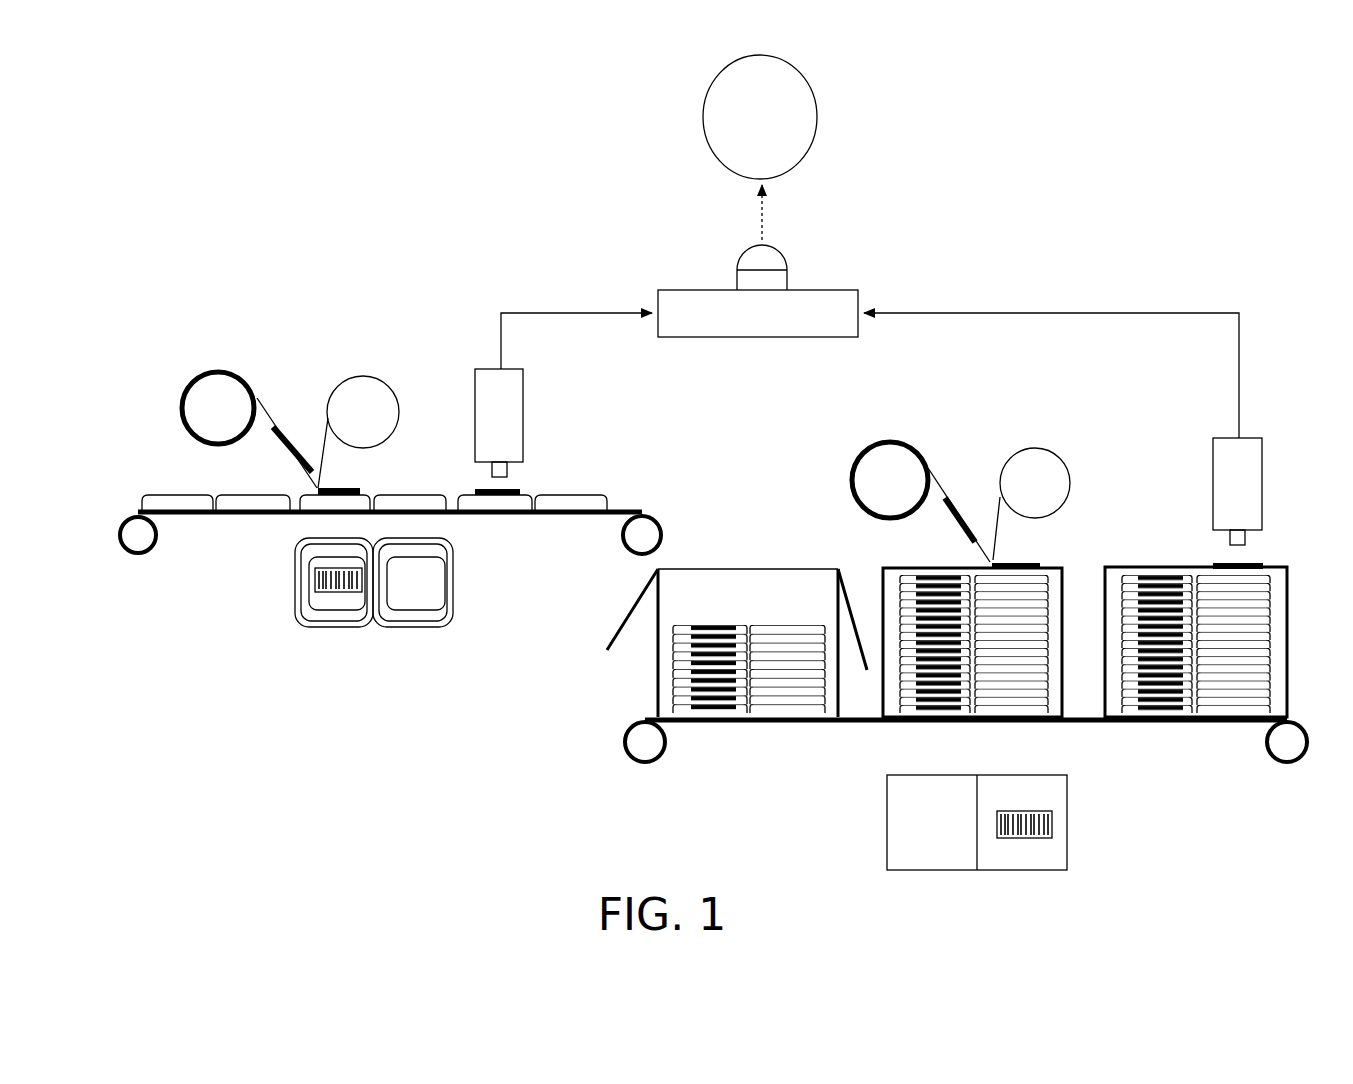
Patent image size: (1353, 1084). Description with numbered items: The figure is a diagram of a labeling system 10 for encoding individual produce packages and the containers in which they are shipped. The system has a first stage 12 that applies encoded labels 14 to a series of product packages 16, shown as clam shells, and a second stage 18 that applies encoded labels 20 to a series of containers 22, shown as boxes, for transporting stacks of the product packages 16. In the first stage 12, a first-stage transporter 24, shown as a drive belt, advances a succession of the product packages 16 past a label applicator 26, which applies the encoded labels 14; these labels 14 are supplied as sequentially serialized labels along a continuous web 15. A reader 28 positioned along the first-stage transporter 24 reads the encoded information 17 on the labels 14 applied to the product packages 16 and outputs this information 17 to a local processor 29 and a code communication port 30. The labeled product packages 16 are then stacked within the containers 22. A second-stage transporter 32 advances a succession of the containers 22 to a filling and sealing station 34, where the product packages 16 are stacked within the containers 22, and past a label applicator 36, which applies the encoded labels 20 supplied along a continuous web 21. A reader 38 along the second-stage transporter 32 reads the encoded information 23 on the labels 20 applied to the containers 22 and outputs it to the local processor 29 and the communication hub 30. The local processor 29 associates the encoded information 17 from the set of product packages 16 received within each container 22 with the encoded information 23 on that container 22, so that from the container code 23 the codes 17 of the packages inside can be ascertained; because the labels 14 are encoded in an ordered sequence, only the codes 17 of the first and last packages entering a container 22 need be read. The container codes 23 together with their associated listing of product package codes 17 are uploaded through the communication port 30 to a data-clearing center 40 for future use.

The labeling system 10 is at (272, 236).
The first stage 12 is at (405, 330).
The encoded labels 14 is at (305, 462).
The continuous web 15 is at (258, 398).
The product packages 16 is at (178, 492).
The encoded information 17 is at (332, 596).
The second stage 18 is at (1057, 425).
The encoded labels 20 is at (960, 525).
The continuous web 21 is at (938, 468).
The containers 22 is at (657, 660).
The encoded information 23 is at (1030, 843).
The first-stage transporter 24 is at (252, 518).
The label applicator 26 is at (308, 445).
The reader 28 is at (563, 395).
The local processor 29 is at (758, 313).
The code communication port 30 is at (778, 262).
The second-stage transporter 32 is at (858, 725).
The filling and sealing station 34 is at (733, 560).
The label applicator 36 is at (980, 522).
The reader 38 is at (1063, 429).
The data-clearing center 40 is at (760, 117).